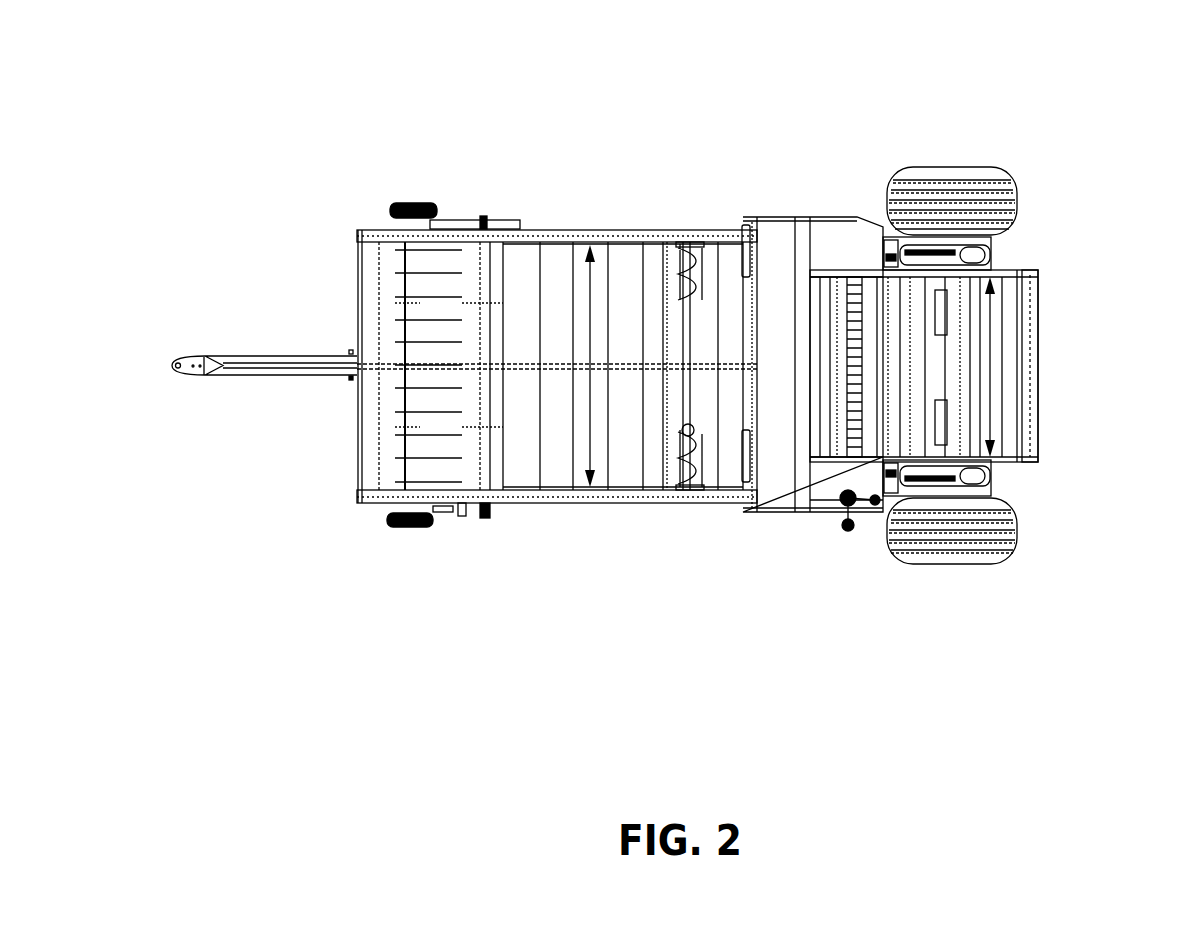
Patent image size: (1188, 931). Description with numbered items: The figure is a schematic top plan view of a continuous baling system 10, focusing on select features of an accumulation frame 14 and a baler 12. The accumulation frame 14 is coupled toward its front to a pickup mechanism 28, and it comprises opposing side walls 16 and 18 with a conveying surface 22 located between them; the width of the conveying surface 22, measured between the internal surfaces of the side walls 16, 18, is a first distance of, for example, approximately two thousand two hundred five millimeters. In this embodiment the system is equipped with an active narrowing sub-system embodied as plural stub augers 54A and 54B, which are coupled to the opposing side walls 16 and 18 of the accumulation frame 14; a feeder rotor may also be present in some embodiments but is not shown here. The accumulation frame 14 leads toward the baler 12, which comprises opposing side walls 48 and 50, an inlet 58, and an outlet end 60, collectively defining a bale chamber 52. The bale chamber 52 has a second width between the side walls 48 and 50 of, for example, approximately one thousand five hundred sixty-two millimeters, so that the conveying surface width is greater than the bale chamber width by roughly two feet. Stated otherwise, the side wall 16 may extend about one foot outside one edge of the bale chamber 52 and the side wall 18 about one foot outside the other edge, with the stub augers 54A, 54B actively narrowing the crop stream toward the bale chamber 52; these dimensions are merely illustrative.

The continuous baling system 10 is at (268, 91).
The baler 12 is at (778, 217).
The accumulation frame 14 is at (514, 176).
The side wall 16 is at (623, 245).
The side wall 18 is at (627, 492).
The conveying surface 22 is at (563, 262).
The pickup mechanism 28 is at (405, 297).
The side wall 48 is at (992, 458).
The side wall 50 is at (1003, 268).
The bale chamber 52 is at (1020, 371).
The stub auger 54A is at (688, 225).
The stub auger 54B is at (688, 510).
The inlet 58 is at (812, 452).
The outlet end 60 is at (1038, 338).